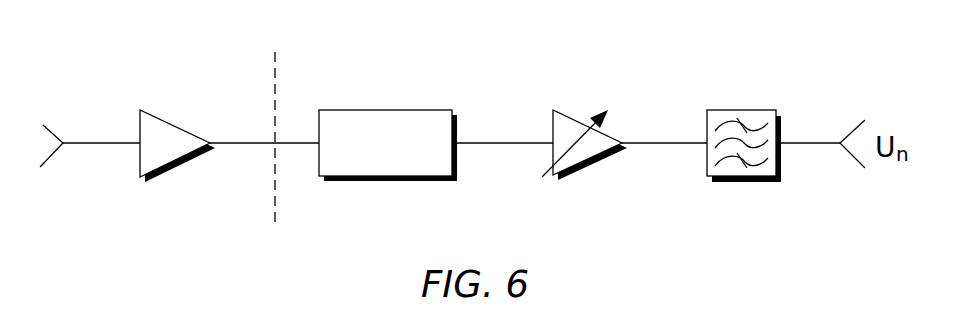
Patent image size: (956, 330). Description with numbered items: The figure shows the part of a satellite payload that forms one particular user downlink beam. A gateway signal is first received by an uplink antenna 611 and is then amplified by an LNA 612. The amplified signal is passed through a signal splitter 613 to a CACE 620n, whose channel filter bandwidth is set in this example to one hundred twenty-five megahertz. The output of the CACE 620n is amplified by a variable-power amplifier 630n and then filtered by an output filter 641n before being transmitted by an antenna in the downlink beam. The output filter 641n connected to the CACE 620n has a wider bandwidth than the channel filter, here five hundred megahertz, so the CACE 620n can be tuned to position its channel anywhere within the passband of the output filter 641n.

The uplink antenna 611 is at (44, 124).
The LNA 612 is at (172, 118).
The signal splitter 613 is at (273, 76).
The CACE 620n is at (390, 108).
The variable-power amplifier 630n is at (580, 118).
The output filter 641n is at (745, 108).